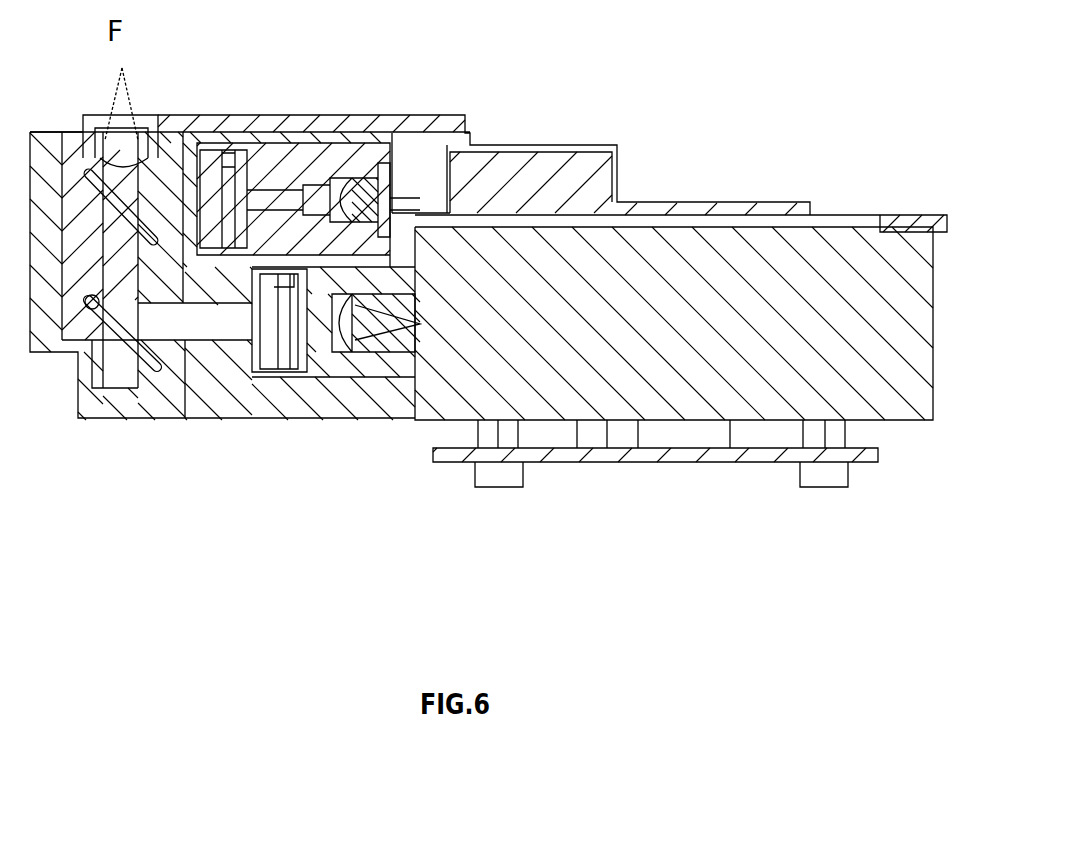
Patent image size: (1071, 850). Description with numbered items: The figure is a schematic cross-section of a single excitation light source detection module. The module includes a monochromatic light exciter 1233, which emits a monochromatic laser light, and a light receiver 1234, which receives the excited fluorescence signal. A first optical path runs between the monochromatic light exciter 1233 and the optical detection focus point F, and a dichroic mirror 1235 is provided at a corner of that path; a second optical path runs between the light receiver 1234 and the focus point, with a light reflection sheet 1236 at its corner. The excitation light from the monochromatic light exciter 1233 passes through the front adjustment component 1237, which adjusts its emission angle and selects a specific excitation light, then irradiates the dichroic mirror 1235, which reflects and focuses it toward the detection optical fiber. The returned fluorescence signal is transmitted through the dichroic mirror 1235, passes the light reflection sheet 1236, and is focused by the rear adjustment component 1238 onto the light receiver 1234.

The monochromatic light exciter 1233 is at (378, 202).
The light receiver 1234 is at (425, 322).
The dichroic mirror 1235 is at (140, 232).
The light reflection sheet 1236 is at (117, 340).
The front adjustment component 1237 is at (235, 190).
The rear adjustment component 1238 is at (333, 313).